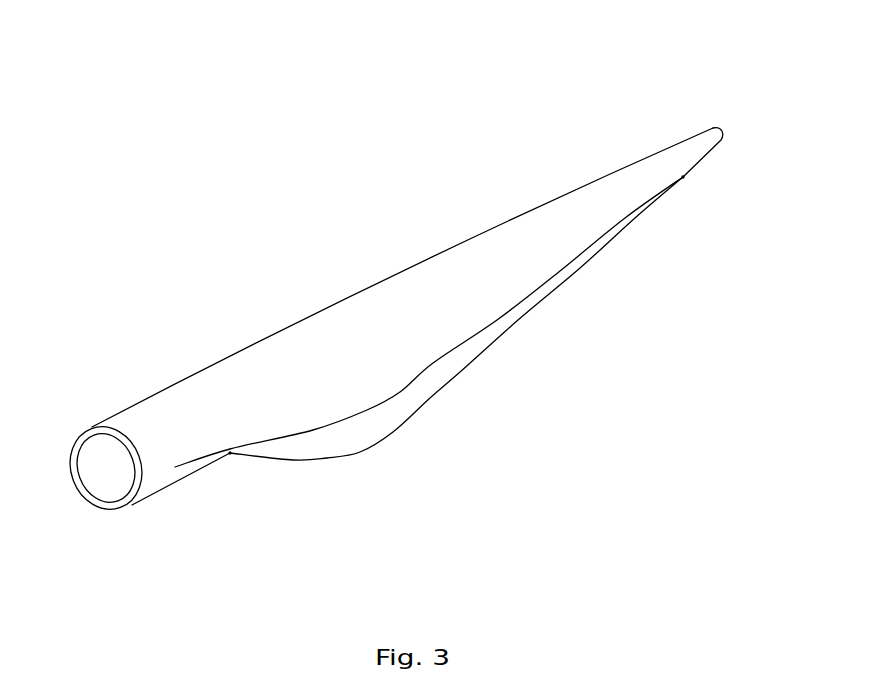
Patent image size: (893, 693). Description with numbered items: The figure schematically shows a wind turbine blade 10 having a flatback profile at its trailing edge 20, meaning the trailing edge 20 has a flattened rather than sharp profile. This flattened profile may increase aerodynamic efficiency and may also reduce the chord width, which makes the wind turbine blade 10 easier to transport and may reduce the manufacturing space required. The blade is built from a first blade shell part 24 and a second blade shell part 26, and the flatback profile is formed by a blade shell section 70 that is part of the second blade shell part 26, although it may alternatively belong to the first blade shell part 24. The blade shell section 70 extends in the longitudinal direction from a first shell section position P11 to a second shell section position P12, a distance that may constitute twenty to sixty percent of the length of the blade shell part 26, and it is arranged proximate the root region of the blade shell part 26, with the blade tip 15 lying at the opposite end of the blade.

The wind turbine blade 10 is at (173, 158).
The blade tip 15 is at (718, 128).
The trailing edge 20 is at (450, 363).
The first blade shell part 24 is at (470, 260).
The second blade shell part 26 is at (147, 490).
The blade shell section 70 is at (386, 443).
The first shell section position P11 is at (232, 456).
The second shell section position P12 is at (681, 183).